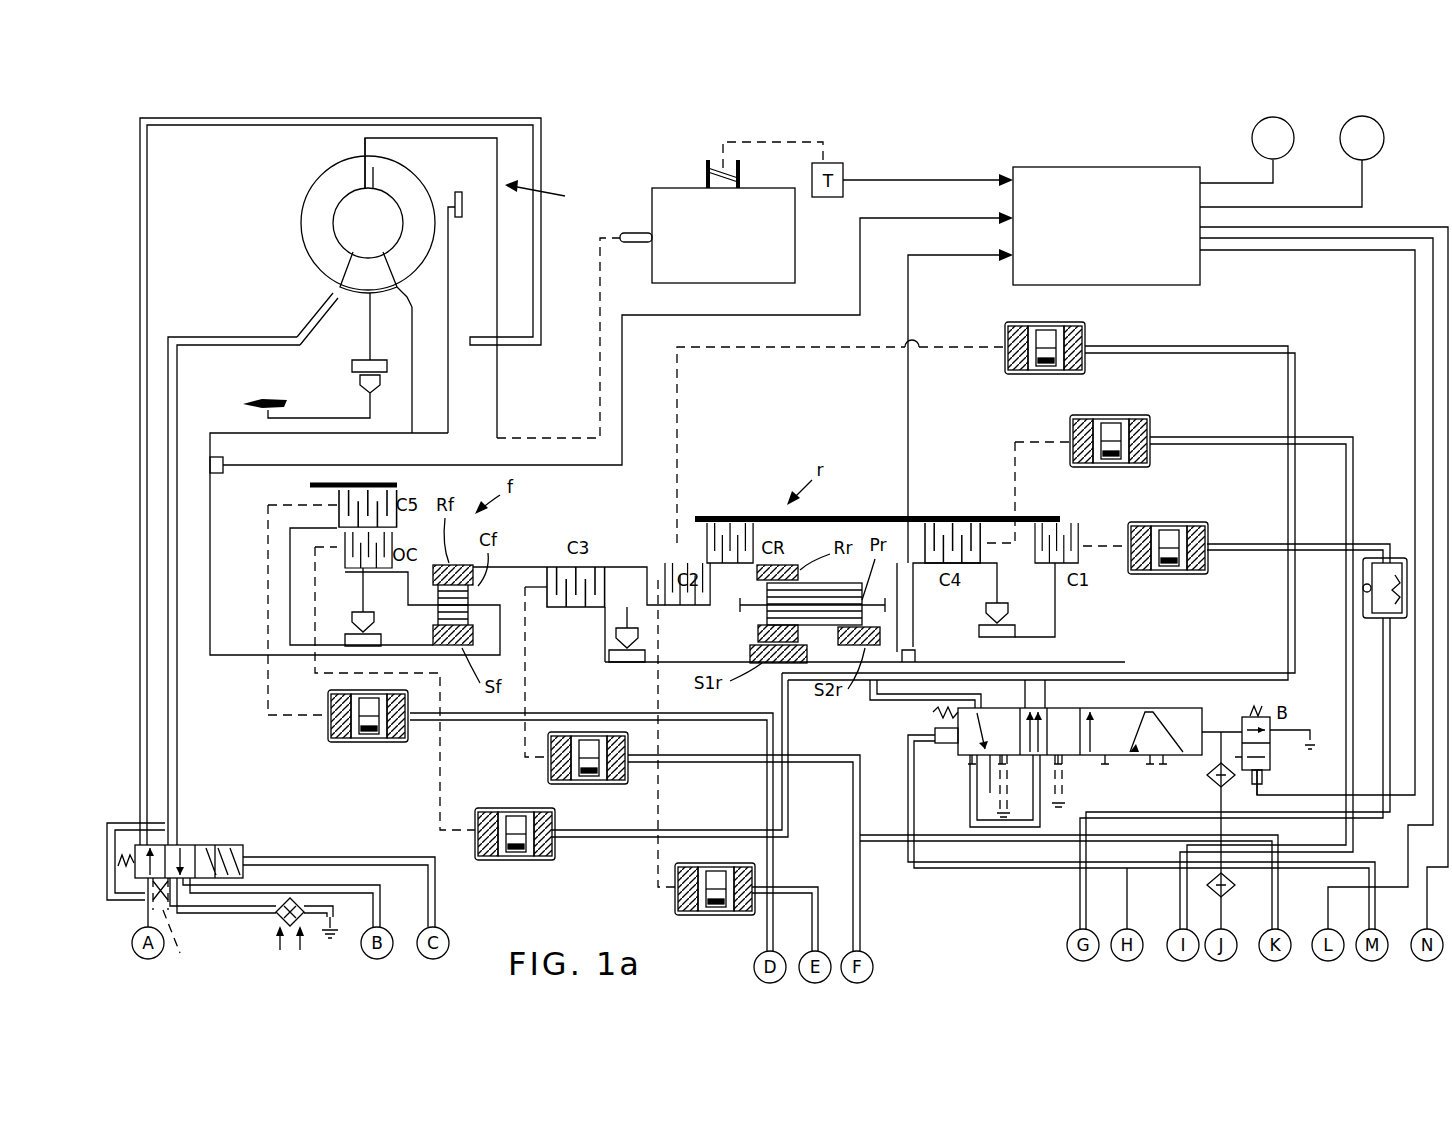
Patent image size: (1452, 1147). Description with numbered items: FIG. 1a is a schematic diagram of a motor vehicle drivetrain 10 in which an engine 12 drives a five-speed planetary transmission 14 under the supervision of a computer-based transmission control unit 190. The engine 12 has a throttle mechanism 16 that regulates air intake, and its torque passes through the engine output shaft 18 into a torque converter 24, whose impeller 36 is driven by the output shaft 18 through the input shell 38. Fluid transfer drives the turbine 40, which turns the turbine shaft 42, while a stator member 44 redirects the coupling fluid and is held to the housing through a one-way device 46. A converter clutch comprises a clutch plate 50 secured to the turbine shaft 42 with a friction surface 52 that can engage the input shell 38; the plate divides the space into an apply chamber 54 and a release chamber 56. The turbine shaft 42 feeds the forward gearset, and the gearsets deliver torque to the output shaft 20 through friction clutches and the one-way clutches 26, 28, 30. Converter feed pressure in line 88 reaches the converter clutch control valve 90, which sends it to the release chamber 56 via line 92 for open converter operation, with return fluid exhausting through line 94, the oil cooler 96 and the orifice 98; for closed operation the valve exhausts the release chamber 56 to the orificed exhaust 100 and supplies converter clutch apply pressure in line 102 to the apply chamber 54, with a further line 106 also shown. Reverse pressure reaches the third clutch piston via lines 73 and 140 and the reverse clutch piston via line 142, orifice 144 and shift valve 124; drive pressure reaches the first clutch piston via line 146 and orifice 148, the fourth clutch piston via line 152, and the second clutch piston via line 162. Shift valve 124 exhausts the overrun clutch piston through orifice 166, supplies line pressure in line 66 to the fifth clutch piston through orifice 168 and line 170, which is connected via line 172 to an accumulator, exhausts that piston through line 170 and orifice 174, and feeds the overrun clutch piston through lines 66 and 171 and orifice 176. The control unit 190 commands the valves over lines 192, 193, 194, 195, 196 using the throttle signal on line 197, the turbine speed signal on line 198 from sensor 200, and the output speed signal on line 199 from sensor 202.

The motor vehicle drivetrain 10 is at (874, 156).
The engine 12 is at (651, 212).
The planetary transmission 14 is at (688, 490).
The throttle mechanism 16 is at (713, 173).
The engine output shaft 18 is at (636, 244).
The output shaft 20 is at (1121, 672).
The torque converter 24 is at (330, 222).
The one-way clutch 26 is at (356, 648).
The one-way clutch 28 is at (626, 661).
The one-way clutch 30 is at (980, 629).
The impeller 36 is at (304, 238).
The input shell 38 is at (499, 152).
The turbine 40 is at (408, 186).
The turbine shaft 42 is at (222, 432).
The stator member 44 is at (338, 284).
The one-way device 46 is at (358, 386).
The clutch plate 50 is at (449, 256).
The friction surface 52 is at (463, 199).
The apply chamber 54 is at (413, 332).
The release chamber 56 is at (500, 292).
The line 66 is at (1278, 913).
The line 73 is at (862, 905).
The line 88 is at (142, 927).
The TCC control valve 90 is at (192, 844).
The line 92 is at (140, 673).
The line 94 is at (178, 648).
The oil cooler 96 is at (276, 916).
The orifice 98 is at (338, 931).
The orificed exhaust 100 is at (187, 943).
The line 102 is at (330, 885).
The line to port C 106 is at (437, 891).
The shift valve 124 is at (1162, 707).
The line 140 is at (852, 766).
The line 142 is at (966, 850).
The orifice 144 is at (1060, 769).
The line 146 is at (1080, 916).
The orifice 148 is at (1393, 566).
The line 152 is at (1178, 905).
The line 162 is at (818, 888).
The orifice 166 is at (1042, 770).
The orifice 168 is at (986, 762).
The line 170 is at (862, 724).
The line 171 is at (765, 722).
The line 172 is at (766, 778).
The orifice 174 is at (978, 772).
The orifice 176 is at (1056, 790).
The transmission control unit 190 is at (1147, 288).
The control line 192 is at (1365, 227).
The control line 193 is at (1348, 252).
The control line 194 is at (1315, 240).
The control line 195 is at (1310, 206).
The control line 196 is at (1223, 182).
The throttle signal line 197 is at (956, 178).
The turbine speed signal line 198 is at (858, 258).
The output speed signal line 199 is at (916, 266).
The sensor 200 is at (224, 476).
The sensor 202 is at (925, 657).